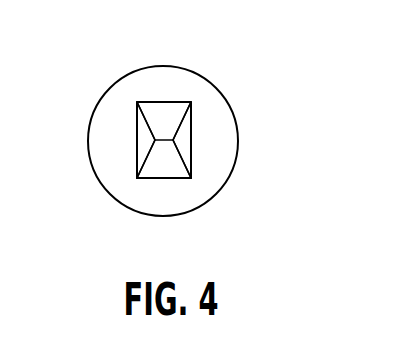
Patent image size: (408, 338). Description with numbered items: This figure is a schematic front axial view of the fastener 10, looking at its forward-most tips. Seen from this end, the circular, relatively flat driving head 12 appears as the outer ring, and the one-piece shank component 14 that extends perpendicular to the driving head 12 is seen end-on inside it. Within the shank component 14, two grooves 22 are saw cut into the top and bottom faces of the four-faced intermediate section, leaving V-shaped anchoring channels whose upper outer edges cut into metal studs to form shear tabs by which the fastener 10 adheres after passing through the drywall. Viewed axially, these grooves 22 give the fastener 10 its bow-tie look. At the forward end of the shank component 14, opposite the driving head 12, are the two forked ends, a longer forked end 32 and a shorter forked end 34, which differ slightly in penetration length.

The fastener 10 is at (194, 108).
The driving head 12 is at (231, 175).
The shank component 14 is at (131, 209).
The grooves 22 is at (180, 124).
The longer forked end 32 is at (144, 138).
The shorter forked end 34 is at (181, 141).